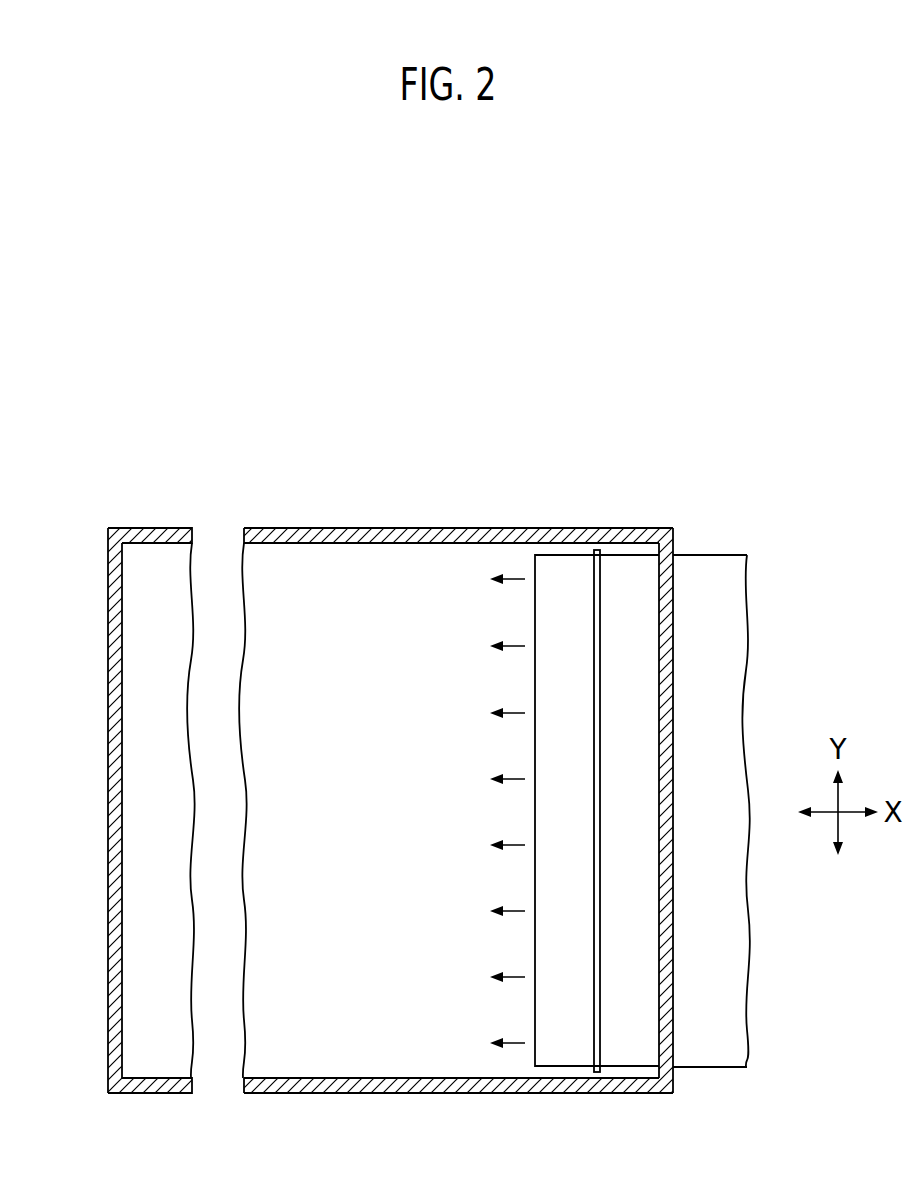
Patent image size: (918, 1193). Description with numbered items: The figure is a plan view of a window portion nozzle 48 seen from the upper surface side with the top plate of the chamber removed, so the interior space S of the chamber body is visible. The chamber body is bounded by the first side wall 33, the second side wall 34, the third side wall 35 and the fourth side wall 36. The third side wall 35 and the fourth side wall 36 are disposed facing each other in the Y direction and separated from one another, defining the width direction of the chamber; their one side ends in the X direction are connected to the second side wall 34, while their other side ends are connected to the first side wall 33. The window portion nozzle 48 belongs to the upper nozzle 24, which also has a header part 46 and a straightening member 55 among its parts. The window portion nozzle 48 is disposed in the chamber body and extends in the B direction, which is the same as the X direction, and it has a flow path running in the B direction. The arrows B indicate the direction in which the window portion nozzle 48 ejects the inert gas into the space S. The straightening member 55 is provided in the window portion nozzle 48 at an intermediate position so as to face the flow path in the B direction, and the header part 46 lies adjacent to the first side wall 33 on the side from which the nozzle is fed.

The third side wall 35 is at (275, 530).
The second side wall 34 is at (108, 772).
The fourth side wall 36 is at (150, 1086).
The first side wall 33 is at (668, 910).
The header part 46 is at (730, 1013).
The window portion nozzle 48 is at (565, 1050).
The straightening member 55 is at (598, 1052).
The upper nozzle 24 is at (710, 1067).
The B direction B is at (503, 577).
The space S is at (316, 1005).